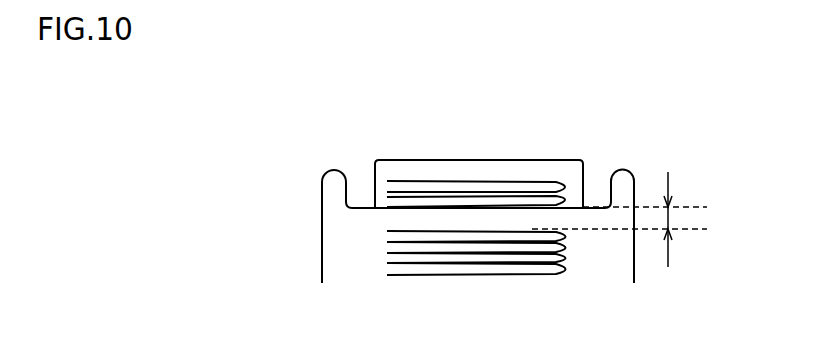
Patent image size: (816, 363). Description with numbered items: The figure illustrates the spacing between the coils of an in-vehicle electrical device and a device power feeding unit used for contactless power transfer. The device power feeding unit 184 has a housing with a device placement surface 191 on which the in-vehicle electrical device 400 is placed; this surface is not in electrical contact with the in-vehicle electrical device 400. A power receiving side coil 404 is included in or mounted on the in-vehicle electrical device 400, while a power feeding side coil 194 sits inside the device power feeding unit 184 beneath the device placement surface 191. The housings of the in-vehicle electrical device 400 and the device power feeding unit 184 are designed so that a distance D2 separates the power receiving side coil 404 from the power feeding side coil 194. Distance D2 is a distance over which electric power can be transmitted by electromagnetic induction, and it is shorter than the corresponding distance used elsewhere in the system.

The device power feeding unit 184 is at (308, 287).
The device placement surface 191 is at (361, 204).
The power feeding side coil 194 is at (530, 273).
The in-vehicle electrical device 400 is at (540, 159).
The power receiving side coil 404 is at (435, 181).
The distance D2 is at (619, 219).